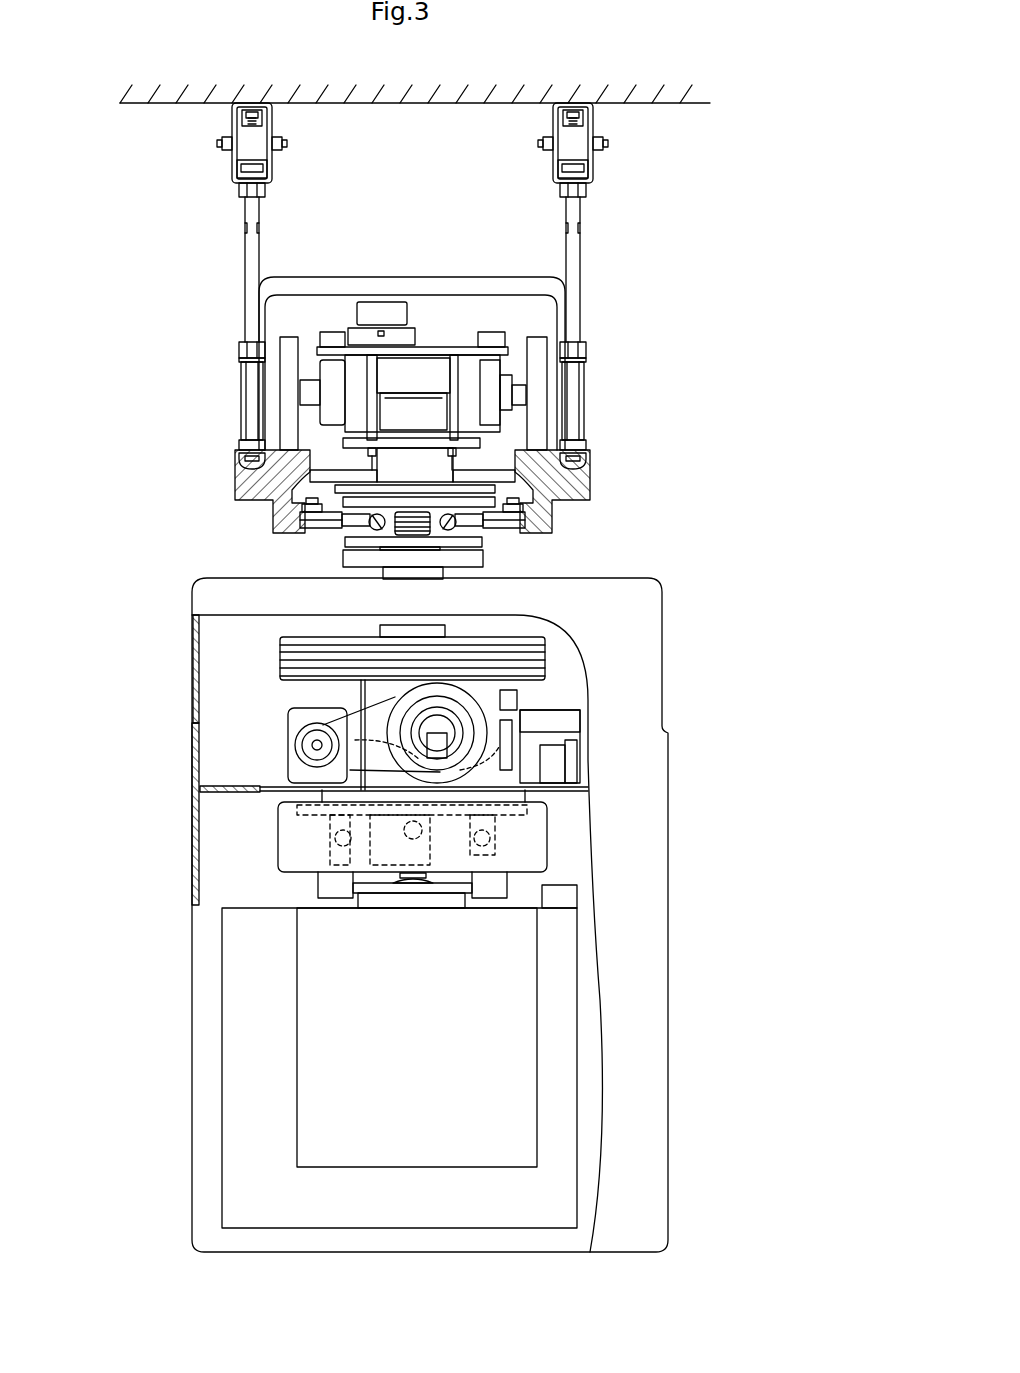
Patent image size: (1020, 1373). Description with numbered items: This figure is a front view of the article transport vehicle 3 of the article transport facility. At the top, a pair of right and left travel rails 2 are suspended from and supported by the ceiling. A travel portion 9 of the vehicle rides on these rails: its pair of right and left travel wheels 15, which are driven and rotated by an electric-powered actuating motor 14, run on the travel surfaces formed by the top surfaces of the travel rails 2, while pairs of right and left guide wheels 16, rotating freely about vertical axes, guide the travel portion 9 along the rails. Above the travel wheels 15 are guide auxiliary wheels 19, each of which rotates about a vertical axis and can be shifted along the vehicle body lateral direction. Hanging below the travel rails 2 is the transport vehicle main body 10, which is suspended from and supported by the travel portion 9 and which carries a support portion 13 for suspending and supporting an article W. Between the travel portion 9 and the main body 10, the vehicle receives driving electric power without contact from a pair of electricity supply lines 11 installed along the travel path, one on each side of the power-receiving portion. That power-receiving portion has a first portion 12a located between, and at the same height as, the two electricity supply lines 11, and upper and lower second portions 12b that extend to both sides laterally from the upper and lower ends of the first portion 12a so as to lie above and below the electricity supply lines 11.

The travel rails 2 is at (235, 472).
The article transport vehicle 3 is at (705, 656).
The travel portions 9 is at (441, 327).
The transport vehicle main body 10 is at (647, 768).
The electricity supply lines 11 is at (352, 525).
The first portion 12a is at (428, 540).
The second portions 12b is at (476, 505).
The support portion 13 is at (258, 837).
The actuating motor 14 is at (298, 337).
The travel wheels 15 is at (286, 397).
The guide wheels 16 is at (490, 474).
The guide auxiliary wheels 19 is at (383, 302).
The article W is at (560, 1070).